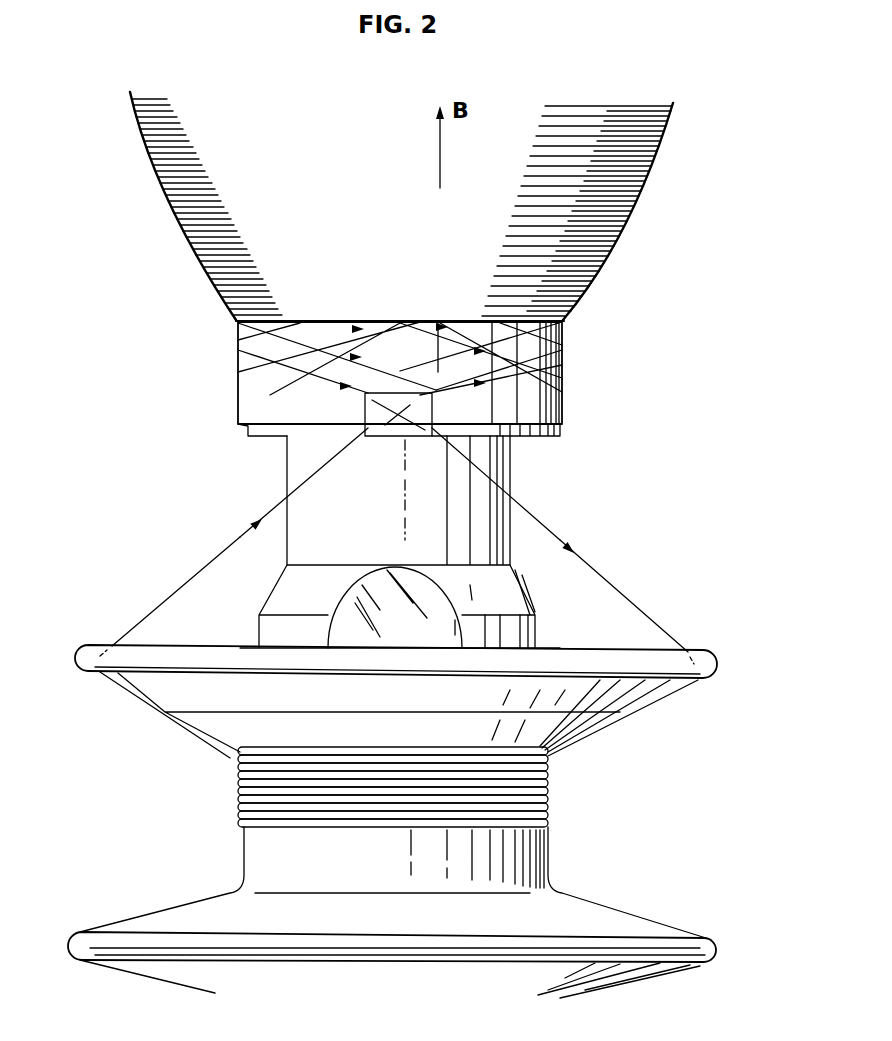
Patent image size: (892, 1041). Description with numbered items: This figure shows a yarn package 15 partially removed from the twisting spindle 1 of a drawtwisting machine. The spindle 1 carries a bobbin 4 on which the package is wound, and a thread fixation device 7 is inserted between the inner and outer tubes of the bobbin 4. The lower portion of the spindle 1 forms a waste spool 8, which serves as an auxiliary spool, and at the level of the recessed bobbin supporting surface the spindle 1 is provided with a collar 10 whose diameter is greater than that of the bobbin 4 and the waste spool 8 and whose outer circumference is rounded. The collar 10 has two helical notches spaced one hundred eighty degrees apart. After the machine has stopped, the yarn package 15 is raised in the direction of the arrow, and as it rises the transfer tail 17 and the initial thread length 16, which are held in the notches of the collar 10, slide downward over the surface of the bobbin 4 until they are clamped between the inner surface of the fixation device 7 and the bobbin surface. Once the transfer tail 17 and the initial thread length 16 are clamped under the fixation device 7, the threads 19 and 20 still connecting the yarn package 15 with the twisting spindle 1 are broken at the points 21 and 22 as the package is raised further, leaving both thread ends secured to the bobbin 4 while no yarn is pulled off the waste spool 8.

The twisting spindle 1 is at (568, 923).
The bobbin 4 is at (258, 388).
The thread fixation device 7 is at (395, 420).
The waste spool portion 8 is at (552, 828).
The collar 10 is at (695, 682).
The yarn package 15 is at (637, 183).
The initial thread length 16 is at (256, 366).
The transfer tail 17 is at (533, 392).
The connecting thread 19 is at (596, 580).
The connecting thread 20 is at (185, 582).
The breaking point 21 is at (556, 540).
The breaking point 22 is at (246, 540).